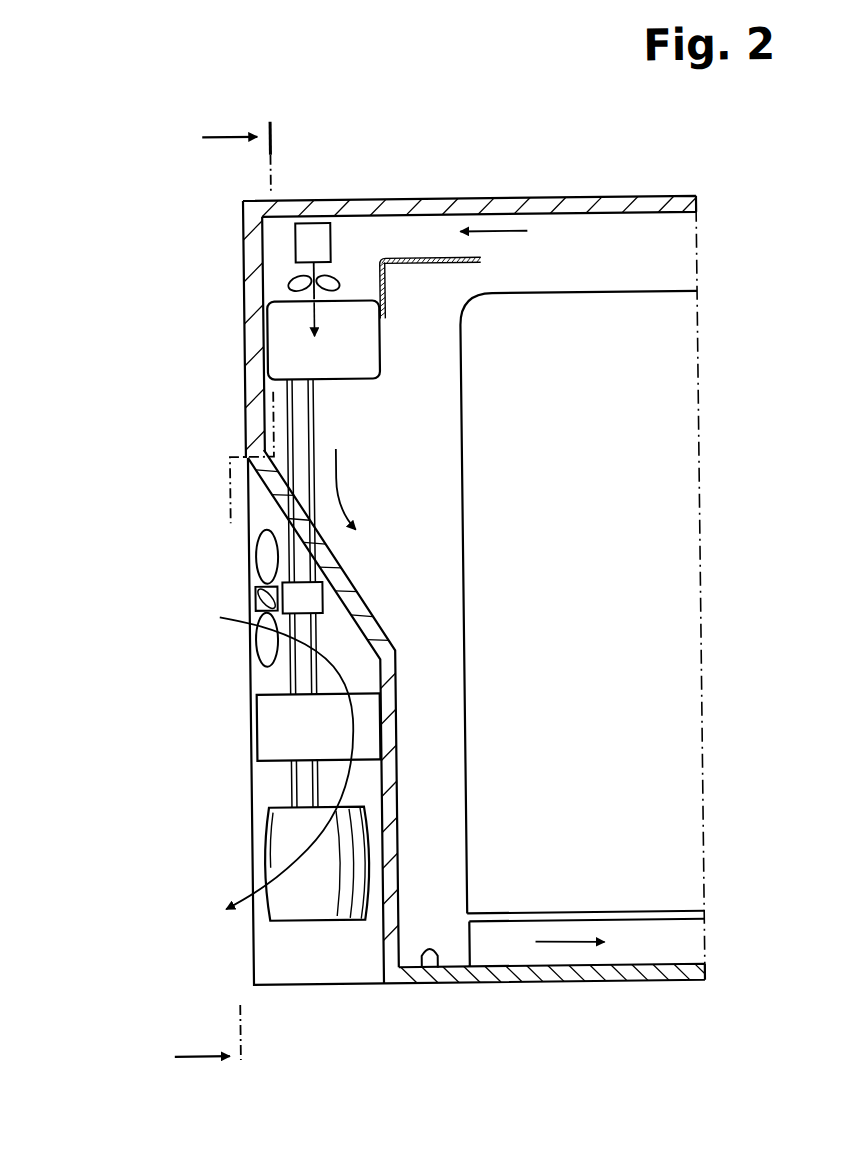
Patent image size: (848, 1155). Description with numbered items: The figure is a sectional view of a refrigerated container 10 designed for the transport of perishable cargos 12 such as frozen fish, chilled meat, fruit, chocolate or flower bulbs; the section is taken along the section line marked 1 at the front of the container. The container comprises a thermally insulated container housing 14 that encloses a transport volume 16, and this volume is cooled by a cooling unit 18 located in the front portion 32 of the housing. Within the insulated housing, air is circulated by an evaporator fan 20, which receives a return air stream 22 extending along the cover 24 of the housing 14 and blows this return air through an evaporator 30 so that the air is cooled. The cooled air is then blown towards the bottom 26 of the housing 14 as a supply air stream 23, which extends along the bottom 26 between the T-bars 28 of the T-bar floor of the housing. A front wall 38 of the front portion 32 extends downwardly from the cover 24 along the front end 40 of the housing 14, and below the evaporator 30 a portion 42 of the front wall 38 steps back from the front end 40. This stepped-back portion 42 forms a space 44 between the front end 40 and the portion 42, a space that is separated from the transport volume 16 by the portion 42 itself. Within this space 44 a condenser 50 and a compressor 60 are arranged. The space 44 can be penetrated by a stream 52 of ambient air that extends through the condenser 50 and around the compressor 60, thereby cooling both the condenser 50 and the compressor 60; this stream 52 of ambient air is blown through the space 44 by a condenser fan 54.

The section line I-I 1 is at (223, 606).
The refrigerated container 10 is at (160, 141).
The perishable cargos 12 is at (651, 609).
The container housing 14 is at (640, 190).
The transport volume 16 is at (663, 260).
The cooling unit 18 is at (397, 400).
The evaporator fan 20 is at (313, 235).
The return air stream 22 is at (494, 235).
The supply air stream 23 is at (333, 479).
The cover 24 is at (565, 209).
The bottom 26 is at (425, 971).
The T-bars 28 is at (677, 950).
The evaporator 30 is at (281, 320).
The front portion 32 is at (240, 242).
The front wall 38 is at (250, 390).
The front end 40 is at (245, 277).
The portion of front wall 42 is at (358, 626).
The space 44 is at (255, 794).
The condenser 50 is at (277, 730).
The stream of ambient air 52 is at (236, 898).
The condenser fan 54 is at (306, 599).
The compressor 60 is at (294, 902).